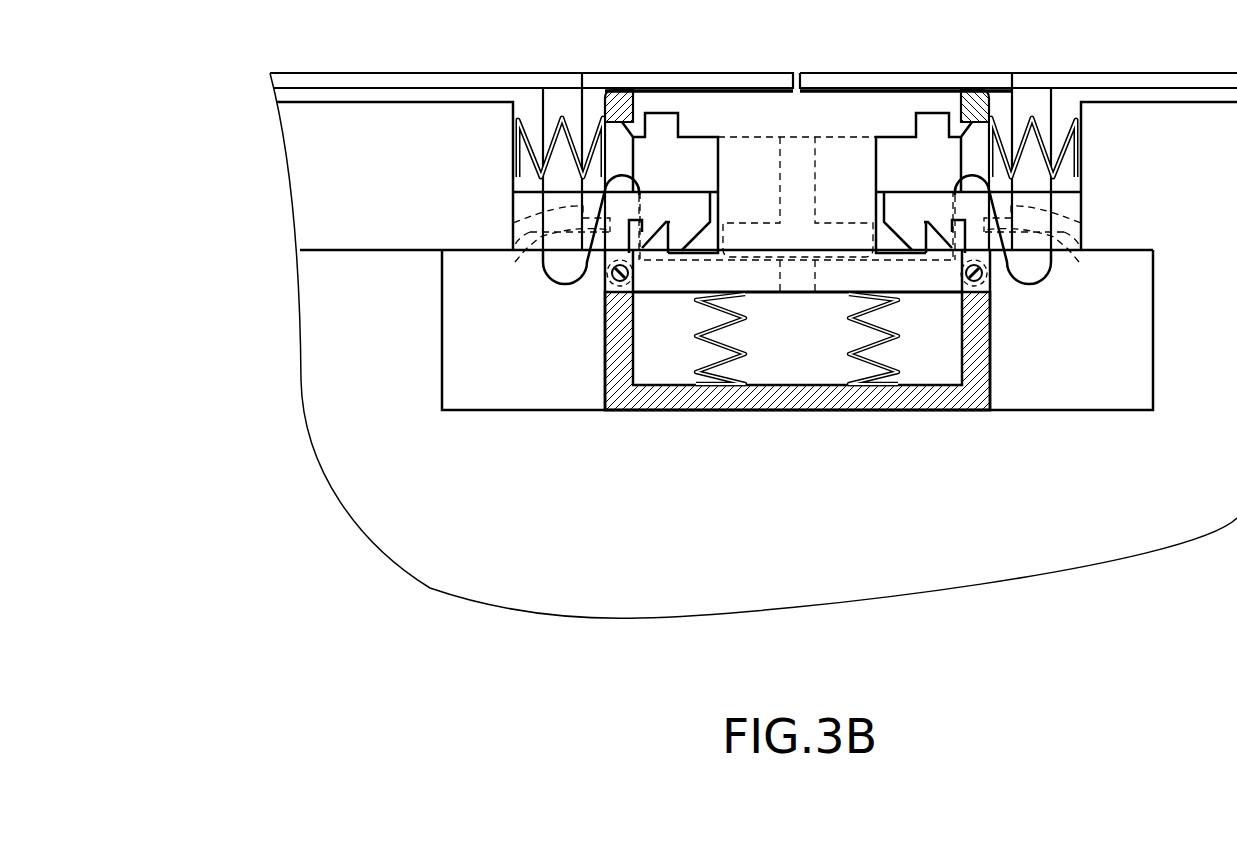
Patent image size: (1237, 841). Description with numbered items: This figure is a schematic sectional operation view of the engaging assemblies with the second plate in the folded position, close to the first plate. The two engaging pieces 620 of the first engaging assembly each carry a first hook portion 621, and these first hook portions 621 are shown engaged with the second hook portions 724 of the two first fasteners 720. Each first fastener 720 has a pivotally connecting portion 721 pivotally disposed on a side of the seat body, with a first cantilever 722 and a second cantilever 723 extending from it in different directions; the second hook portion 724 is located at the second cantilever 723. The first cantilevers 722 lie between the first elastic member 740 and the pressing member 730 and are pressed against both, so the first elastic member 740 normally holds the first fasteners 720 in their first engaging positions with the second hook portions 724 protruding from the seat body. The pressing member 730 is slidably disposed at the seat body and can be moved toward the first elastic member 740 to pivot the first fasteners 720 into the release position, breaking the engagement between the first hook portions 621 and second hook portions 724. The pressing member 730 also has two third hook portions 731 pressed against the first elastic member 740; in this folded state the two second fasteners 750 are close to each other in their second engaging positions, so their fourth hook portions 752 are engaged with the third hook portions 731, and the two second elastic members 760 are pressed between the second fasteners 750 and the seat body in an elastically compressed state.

The engaging piece 620 is at (397, 81).
The first hook portion 621 is at (560, 262).
The first fastener 720 is at (650, 312).
The pivotally connecting portion 721 is at (607, 278).
The first cantilever 722 is at (763, 275).
The second cantilever 723 is at (518, 253).
The second hook portion 724 is at (595, 205).
The pressing member 730 is at (823, 105).
The third hook portion 731 is at (662, 245).
The first elastic member 740 is at (750, 347).
The second fastener 750 is at (328, 191).
The fourth hook portion 752 is at (690, 207).
The second elastic member 760 is at (572, 118).